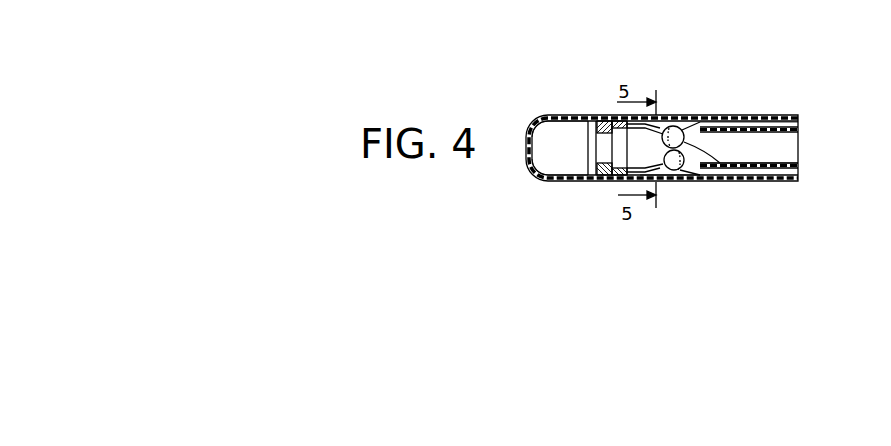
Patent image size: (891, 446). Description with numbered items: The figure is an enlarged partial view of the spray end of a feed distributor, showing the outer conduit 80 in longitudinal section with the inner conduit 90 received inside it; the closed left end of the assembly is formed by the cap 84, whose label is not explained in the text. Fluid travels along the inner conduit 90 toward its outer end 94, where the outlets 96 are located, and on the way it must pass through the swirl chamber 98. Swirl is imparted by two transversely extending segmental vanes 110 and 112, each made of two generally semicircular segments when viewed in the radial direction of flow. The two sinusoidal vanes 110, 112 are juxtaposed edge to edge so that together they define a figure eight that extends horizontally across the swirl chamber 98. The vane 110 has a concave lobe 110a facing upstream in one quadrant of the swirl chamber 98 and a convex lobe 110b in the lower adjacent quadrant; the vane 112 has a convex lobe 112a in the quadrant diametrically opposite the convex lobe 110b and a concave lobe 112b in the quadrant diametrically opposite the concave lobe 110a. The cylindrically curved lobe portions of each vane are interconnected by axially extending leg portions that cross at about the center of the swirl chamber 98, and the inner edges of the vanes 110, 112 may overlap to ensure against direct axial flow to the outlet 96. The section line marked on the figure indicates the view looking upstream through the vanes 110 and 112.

The outer conduit 80 is at (781, 182).
The end cap 84 is at (575, 115).
The inner conduit 90 is at (799, 129).
The outer end 94 is at (711, 120).
The outlet 96 is at (602, 120).
The swirl chamber 98 is at (703, 121).
The segmental vane 110 is at (749, 124).
The concave lobe 110a is at (729, 170).
The convex lobe 110b is at (667, 182).
The segmental vane 112 is at (692, 128).
The convex lobe 112a is at (672, 124).
The concave lobe 112b is at (681, 169).